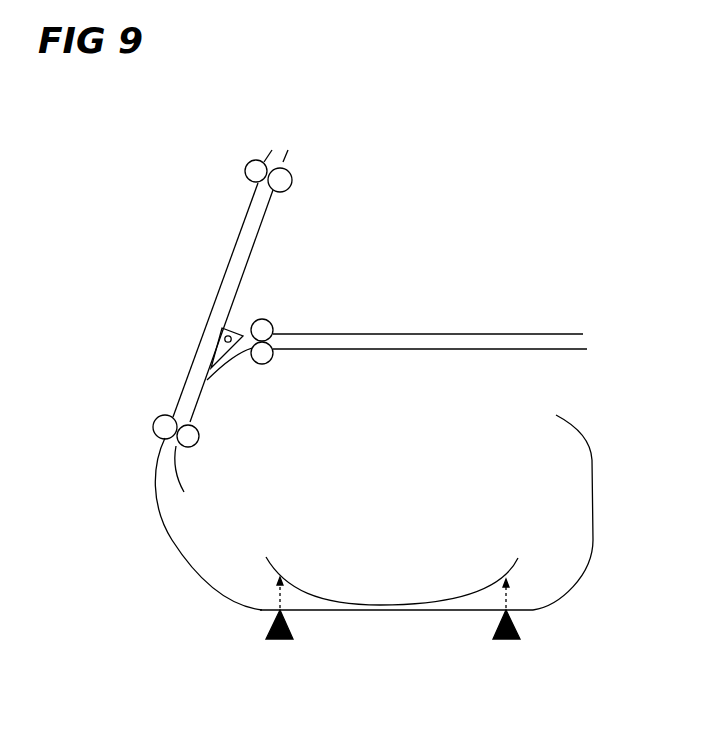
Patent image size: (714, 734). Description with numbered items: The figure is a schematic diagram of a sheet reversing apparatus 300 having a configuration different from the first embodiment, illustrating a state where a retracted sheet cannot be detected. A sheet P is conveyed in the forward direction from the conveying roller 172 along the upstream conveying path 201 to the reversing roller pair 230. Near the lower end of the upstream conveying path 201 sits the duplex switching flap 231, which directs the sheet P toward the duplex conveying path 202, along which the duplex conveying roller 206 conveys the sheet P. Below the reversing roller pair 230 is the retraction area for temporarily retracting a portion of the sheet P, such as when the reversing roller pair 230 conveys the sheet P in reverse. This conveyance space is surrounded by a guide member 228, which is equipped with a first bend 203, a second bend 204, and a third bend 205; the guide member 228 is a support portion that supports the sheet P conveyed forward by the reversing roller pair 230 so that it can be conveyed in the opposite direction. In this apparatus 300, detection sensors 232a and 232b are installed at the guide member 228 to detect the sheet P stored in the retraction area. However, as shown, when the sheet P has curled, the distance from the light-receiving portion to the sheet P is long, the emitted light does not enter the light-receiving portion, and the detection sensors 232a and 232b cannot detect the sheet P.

The sheet reversing apparatus 300 is at (391, 240).
The conveying roller 172 is at (247, 163).
The upstream conveying path 201 is at (237, 265).
The duplex switching flap 231 is at (232, 328).
The duplex conveying roller 206 is at (269, 322).
The duplex conveying path 202 is at (438, 333).
The reversing roller pair 230 is at (159, 417).
The first bend 203 is at (192, 577).
The guide member 228 is at (393, 616).
The third bend 205 is at (591, 450).
The second bend 204 is at (553, 602).
The sheet P is at (473, 597).
The detection sensor 232a is at (277, 640).
The detection sensor 232b is at (508, 640).